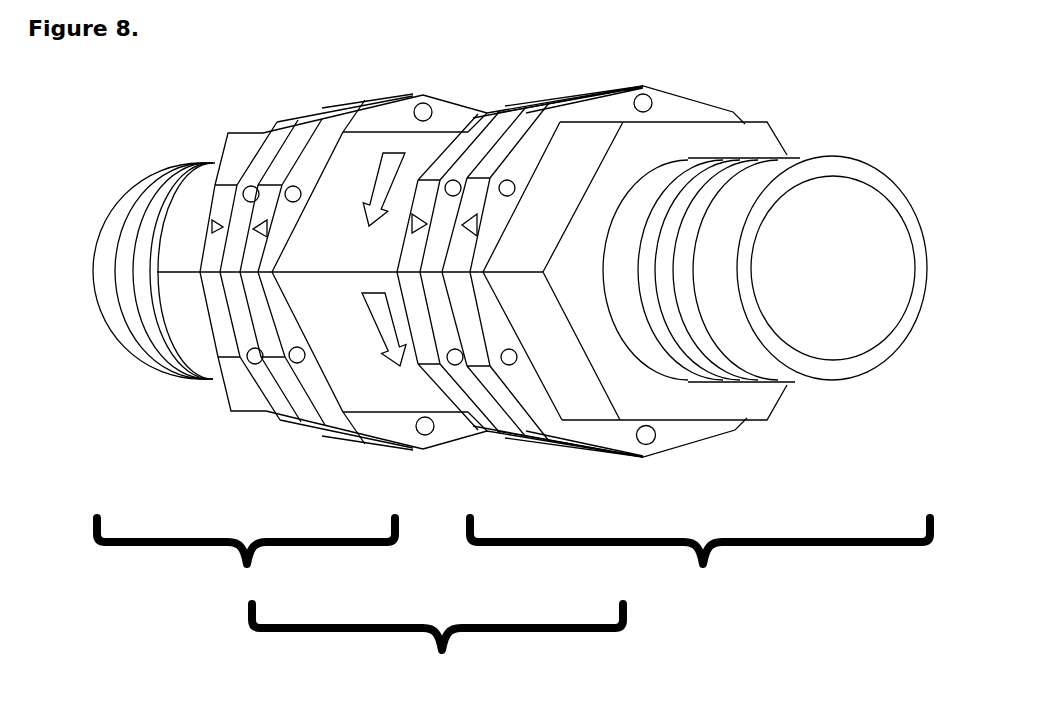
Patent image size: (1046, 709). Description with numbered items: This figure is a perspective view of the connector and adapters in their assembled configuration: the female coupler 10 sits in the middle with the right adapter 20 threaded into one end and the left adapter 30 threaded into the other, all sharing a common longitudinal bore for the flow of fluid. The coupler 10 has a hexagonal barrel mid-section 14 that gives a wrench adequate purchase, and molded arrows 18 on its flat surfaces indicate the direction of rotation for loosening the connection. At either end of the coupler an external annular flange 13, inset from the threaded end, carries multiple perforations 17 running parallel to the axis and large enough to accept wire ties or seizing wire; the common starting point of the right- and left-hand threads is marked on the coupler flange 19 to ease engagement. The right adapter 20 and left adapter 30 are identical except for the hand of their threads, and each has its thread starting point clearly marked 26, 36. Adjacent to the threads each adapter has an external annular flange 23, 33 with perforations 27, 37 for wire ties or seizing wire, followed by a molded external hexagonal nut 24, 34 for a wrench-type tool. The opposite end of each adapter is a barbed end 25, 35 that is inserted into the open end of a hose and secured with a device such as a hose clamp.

The female coupler 10 is at (437, 638).
The external annular flange 13 is at (410, 100).
The hexagonal barrel mid-section 14 is at (363, 128).
The perforations 17 is at (300, 420).
The molded arrows 18 is at (393, 420).
The coupler flange marking 19 is at (447, 150).
The right adapter 20 is at (246, 557).
The external annular flange 23 is at (312, 110).
The external hexagonal nut 24 is at (243, 132).
The barbed end 25 is at (173, 163).
The thread starting point mark 26 is at (178, 352).
The perforations 27 is at (262, 425).
The left adapter 30 is at (700, 557).
The external annular flange 33 is at (663, 90).
The external hexagonal nut 34 is at (717, 120).
The barbed end 35 is at (800, 157).
The thread starting point mark 36 is at (492, 150).
The perforations 37 is at (645, 446).